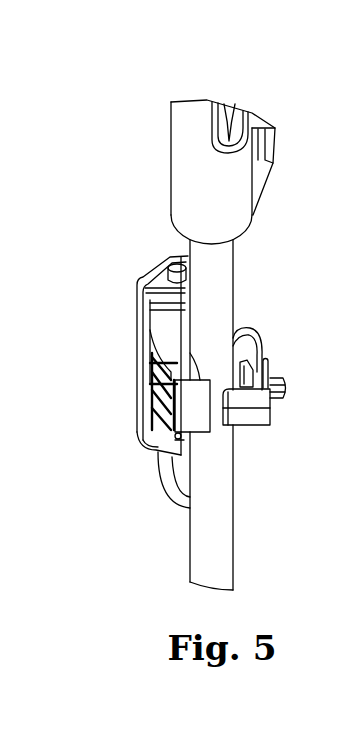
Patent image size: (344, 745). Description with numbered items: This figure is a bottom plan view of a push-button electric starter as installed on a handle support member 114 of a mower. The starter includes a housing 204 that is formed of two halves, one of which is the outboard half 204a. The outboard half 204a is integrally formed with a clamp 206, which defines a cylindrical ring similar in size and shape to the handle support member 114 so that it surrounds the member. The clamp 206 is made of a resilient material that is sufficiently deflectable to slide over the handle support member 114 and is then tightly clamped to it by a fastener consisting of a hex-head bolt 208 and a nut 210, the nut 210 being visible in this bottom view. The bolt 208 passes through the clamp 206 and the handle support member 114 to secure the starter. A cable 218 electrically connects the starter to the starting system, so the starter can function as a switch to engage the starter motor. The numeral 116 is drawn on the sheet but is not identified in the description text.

The handle support member 114 is at (233, 280).
The head 116 is at (223, 172).
The housing 204 is at (137, 355).
The outboard half 204a is at (137, 330).
The clamp 206 is at (193, 440).
The hex-head bolt 208 is at (155, 398).
The nut 210 is at (287, 392).
The cable 218 is at (170, 482).